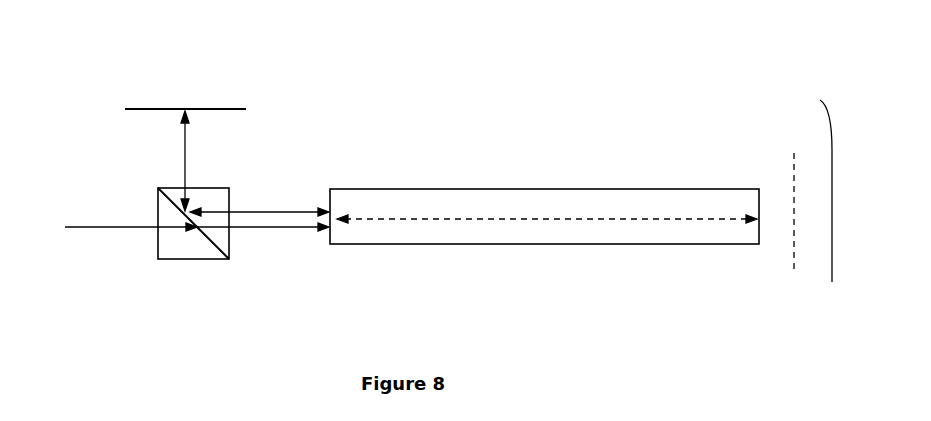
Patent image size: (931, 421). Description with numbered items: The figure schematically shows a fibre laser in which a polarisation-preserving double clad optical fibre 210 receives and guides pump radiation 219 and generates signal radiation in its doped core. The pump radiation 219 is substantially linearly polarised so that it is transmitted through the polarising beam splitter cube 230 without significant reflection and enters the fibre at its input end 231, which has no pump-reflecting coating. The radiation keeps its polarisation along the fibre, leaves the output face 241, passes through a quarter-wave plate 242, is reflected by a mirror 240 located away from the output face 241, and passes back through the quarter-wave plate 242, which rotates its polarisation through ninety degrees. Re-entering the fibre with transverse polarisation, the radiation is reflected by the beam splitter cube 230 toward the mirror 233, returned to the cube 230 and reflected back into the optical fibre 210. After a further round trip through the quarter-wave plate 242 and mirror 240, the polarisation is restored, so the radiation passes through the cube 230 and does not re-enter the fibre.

The double clad optical fibre 210 is at (490, 205).
The pump radiation 219 is at (115, 227).
The polarising beam splitter cube 230 is at (192, 250).
The input end 231 is at (330, 189).
The mirror 233 is at (209, 104).
The mirror 240 is at (812, 179).
The output face 241 is at (760, 198).
The quarter-wave plate 242 is at (794, 150).